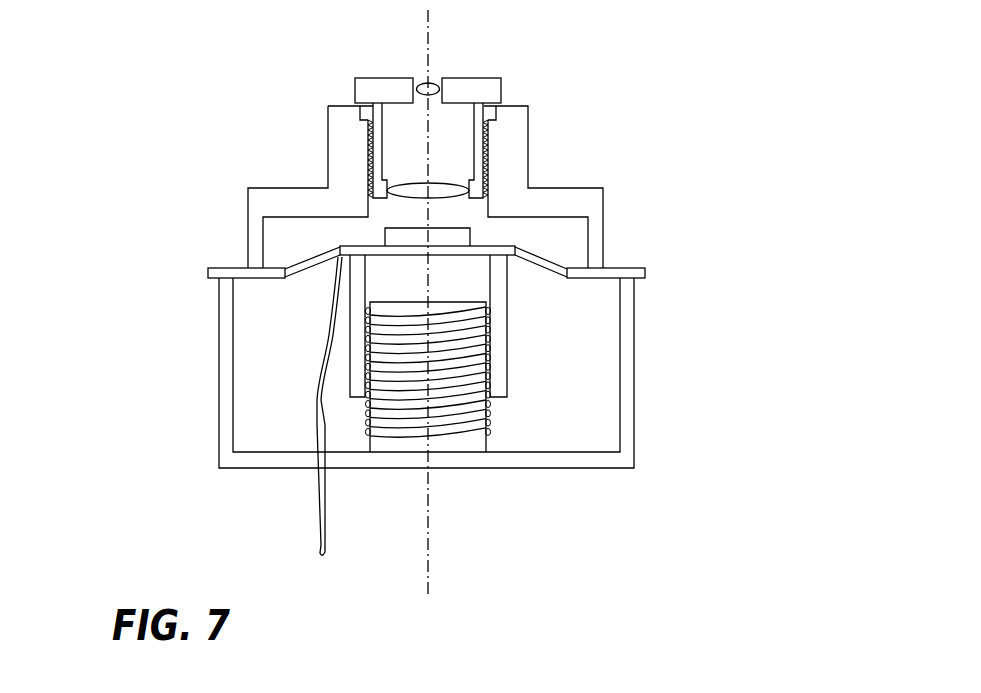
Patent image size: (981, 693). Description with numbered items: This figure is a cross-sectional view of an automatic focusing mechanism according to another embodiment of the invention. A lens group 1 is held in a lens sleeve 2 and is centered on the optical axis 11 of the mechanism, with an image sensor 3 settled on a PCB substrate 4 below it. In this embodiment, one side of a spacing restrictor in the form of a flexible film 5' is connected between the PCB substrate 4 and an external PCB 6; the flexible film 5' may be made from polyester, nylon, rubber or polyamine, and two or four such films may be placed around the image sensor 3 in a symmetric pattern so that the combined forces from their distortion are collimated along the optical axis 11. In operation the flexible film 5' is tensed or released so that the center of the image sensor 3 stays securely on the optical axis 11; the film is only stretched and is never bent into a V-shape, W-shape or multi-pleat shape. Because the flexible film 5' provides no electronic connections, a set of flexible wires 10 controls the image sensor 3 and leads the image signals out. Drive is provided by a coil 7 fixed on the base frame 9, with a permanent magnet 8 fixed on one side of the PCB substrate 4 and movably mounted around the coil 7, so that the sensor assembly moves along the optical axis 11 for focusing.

The lens group 1 is at (430, 82).
The lens sleeve 2 is at (508, 128).
The image sensor 3 is at (473, 248).
The PCB substrate 4 is at (443, 243).
The flexible film 5' is at (409, 236).
The external PCB 6 is at (617, 272).
The drive coil 7 is at (488, 420).
The permanent magnet 8 is at (495, 345).
The base frame 9 is at (565, 459).
The flexible wires 10 is at (328, 544).
The optical axis 11 is at (430, 597).